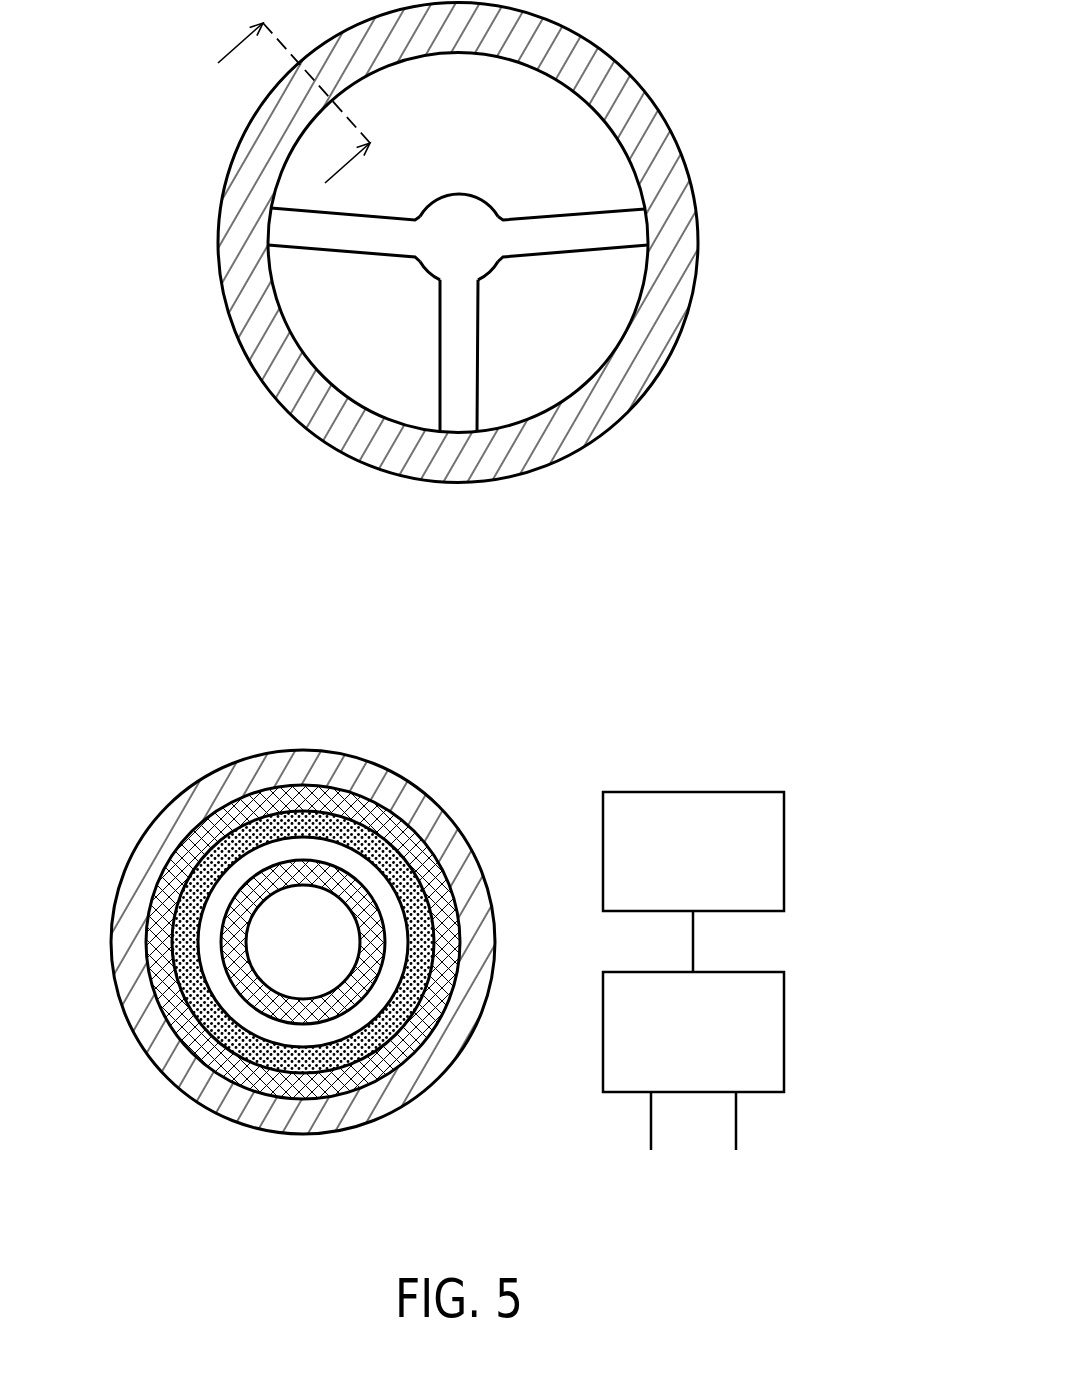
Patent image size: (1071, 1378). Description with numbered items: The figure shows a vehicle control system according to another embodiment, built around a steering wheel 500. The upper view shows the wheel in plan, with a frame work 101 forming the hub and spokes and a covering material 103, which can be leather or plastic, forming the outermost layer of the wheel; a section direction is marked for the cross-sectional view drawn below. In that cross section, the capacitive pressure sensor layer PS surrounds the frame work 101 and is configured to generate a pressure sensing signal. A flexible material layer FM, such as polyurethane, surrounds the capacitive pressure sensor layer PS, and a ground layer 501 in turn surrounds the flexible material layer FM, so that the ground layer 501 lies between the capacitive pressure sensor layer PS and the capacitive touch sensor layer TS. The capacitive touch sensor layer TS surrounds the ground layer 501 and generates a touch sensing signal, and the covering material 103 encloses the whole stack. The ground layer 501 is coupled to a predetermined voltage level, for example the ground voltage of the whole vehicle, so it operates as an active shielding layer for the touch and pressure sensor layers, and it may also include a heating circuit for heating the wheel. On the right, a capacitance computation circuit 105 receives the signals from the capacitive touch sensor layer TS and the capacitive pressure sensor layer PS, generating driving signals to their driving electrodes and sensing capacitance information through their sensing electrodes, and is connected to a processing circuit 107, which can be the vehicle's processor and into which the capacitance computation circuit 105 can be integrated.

The steering wheel 500 is at (663, 68).
The covering material 103 is at (690, 238).
The frame work 101 is at (597, 233).
The ground layer 501 is at (298, 818).
The capacitive touch sensor layer TS is at (450, 892).
The capacitive pressure sensor layer PS is at (360, 997).
The flexible material layer FM is at (338, 1033).
The capacitance computation circuit 105 is at (785, 1033).
The processing circuit 107 is at (785, 852).